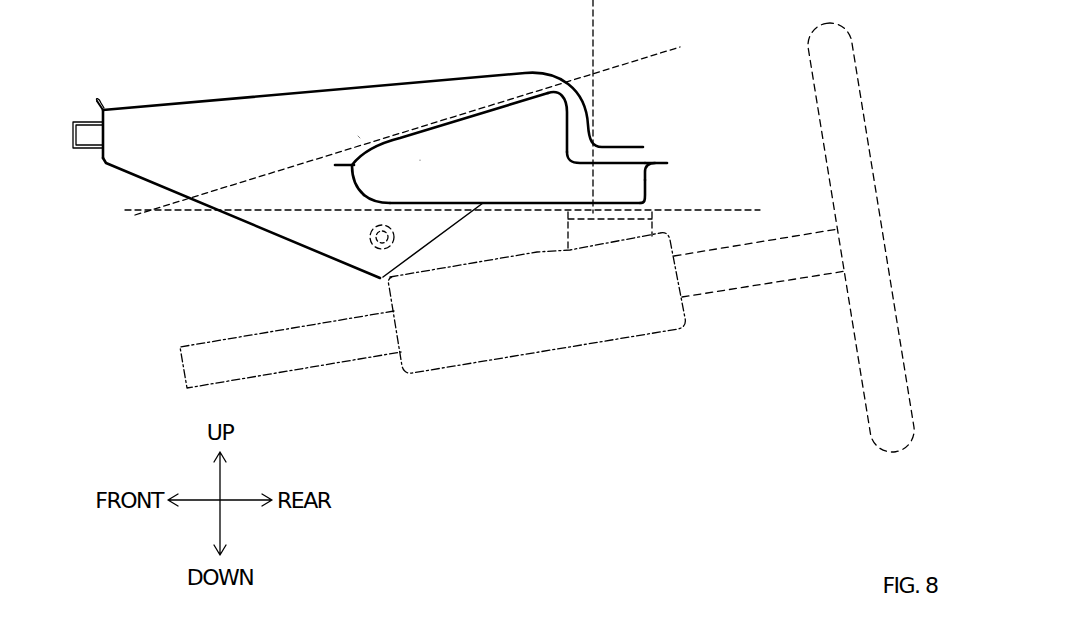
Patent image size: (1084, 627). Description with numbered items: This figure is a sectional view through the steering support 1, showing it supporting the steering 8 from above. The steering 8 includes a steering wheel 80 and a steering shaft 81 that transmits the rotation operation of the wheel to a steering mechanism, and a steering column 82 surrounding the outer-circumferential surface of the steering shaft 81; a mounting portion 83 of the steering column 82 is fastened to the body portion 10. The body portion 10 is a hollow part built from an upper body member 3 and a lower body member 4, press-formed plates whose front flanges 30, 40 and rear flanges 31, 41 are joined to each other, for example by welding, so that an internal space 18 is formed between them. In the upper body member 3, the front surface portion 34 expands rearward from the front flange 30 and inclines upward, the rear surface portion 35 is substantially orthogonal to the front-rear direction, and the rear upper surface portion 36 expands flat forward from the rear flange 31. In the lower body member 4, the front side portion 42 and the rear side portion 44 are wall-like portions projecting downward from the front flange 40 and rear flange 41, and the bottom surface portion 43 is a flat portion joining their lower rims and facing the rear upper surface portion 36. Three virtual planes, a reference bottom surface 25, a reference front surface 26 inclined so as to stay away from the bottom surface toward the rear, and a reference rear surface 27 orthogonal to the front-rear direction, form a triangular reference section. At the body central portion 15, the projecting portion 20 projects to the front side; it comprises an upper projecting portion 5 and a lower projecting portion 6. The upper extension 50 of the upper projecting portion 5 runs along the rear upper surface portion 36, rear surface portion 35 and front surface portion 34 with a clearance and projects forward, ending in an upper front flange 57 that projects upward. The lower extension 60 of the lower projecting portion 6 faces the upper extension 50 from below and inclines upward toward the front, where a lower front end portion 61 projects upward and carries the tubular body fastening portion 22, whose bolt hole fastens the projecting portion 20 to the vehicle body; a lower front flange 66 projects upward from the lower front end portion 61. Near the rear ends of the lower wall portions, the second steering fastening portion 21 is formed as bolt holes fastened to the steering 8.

The steering support 1 is at (686, 88).
The upper body member 3 is at (464, 107).
The lower body member 4 is at (513, 218).
The upper projecting portion 5 is at (266, 62).
The lower projecting portion 6 is at (228, 232).
The steering 8 is at (595, 459).
The body portion 10 is at (499, 173).
The body central portion 15 is at (358, 134).
The internal space 18 is at (455, 180).
The projecting portion 20 is at (343, 153).
The second steering fastening portion 21 is at (391, 249).
The body fastening portion 22 is at (83, 150).
The reference bottom surface 25 is at (730, 205).
The reference front surface 26 is at (630, 62).
The reference rear surface 27 is at (589, 50).
The front flange 30 is at (338, 163).
The rear flange 31 is at (664, 162).
The front surface portion 34 is at (427, 128).
The rear surface portion 35 is at (566, 123).
The rear upper surface portion 36 is at (586, 165).
The front flange 40 is at (342, 172).
The rear flange 41 is at (652, 168).
The front side portion 42 is at (362, 193).
The bottom surface portion 43 is at (478, 206).
The rear side portion 44 is at (648, 192).
The upper extension 50 is at (503, 72).
The upper front flange 57 is at (108, 107).
The lower extension 60 is at (276, 237).
The lower front end portion 61 is at (105, 140).
The lower front flange 66 is at (97, 104).
The steering wheel 80 is at (860, 365).
The steering shaft 81 is at (738, 292).
The steering column 82 is at (573, 348).
The mounting portion 83 is at (612, 222).